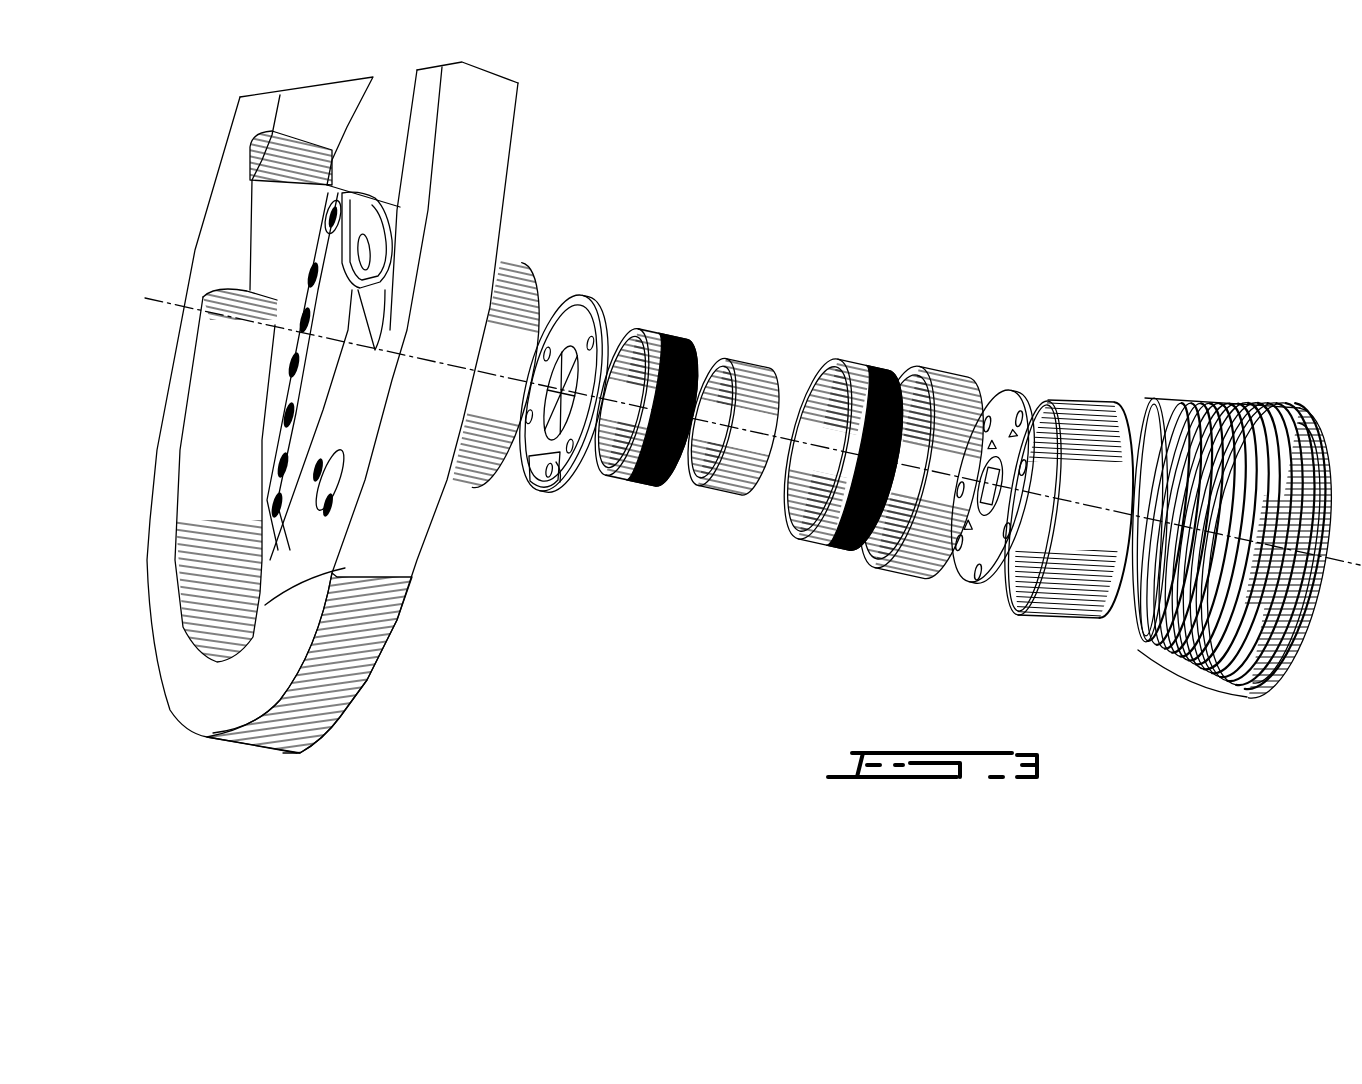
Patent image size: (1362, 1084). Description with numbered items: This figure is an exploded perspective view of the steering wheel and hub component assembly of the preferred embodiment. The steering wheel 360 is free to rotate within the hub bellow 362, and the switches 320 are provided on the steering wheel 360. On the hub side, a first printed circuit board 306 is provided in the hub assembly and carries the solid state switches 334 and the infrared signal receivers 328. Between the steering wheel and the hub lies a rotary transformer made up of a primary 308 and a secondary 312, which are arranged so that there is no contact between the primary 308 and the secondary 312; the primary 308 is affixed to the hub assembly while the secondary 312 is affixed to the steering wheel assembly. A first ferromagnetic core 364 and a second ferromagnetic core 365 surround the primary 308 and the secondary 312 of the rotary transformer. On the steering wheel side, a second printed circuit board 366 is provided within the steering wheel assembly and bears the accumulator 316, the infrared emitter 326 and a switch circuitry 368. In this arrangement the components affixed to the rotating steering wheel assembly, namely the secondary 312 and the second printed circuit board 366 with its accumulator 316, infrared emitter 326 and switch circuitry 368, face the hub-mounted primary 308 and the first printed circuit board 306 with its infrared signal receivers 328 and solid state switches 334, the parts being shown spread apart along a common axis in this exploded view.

The steering wheel 360 is at (382, 407).
The second printed circuit board 366 is at (592, 391).
The infrared emitter 326 is at (586, 350).
The accumulator 316 is at (527, 478).
The switch circuitry 368 is at (567, 473).
The secondary 312 is at (660, 493).
The second ferromagnetic core 365 is at (753, 377).
The primary 308 is at (830, 550).
The first ferromagnetic core 364 is at (940, 377).
The first printed circuit board 306 is at (997, 491).
The solid state switches 334 is at (980, 580).
The infrared signal receivers 328 is at (1052, 413).
The hub bellow 362 is at (1200, 400).
The switches 320 is at (347, 537).